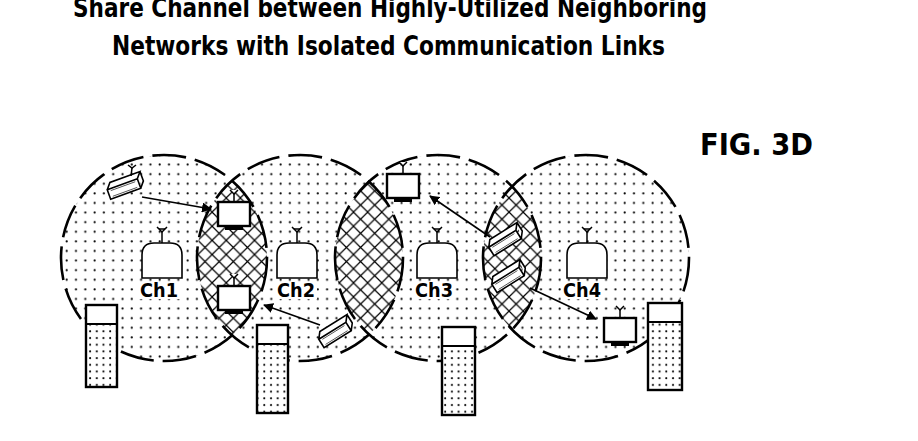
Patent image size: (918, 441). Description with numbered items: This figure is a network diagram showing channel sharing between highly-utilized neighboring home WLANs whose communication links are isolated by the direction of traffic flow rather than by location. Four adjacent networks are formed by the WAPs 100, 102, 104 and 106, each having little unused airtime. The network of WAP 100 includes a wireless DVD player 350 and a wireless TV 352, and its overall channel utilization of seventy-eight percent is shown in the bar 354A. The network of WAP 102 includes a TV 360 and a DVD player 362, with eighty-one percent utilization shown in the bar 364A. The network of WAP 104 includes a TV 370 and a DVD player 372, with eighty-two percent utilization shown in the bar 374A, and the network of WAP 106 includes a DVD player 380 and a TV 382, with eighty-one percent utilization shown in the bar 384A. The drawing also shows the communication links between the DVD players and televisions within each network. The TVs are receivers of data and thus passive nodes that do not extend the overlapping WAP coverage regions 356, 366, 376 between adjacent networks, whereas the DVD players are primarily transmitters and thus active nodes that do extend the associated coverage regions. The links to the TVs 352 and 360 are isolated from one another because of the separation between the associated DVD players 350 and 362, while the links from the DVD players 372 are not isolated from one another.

The WAP 100 is at (143, 258).
The WAP 102 is at (303, 240).
The WAP 104 is at (412, 242).
The WAP 106 is at (602, 225).
The wireless DVD player 350 is at (108, 190).
The wireless TV 352 is at (213, 200).
The bar 354A is at (85, 360).
The overlapping WAP coverage region 356 is at (222, 178).
The TV 360 is at (233, 320).
The DVD player 362 is at (338, 352).
The bar 364A is at (257, 367).
The overlapping WAP coverage region 366 is at (367, 183).
The TV 370 is at (417, 173).
The DVD player 372 is at (498, 192).
The bar 374A is at (477, 360).
The overlapping WAP coverage region 376 is at (510, 185).
The DVD player 380 is at (520, 291).
The TV 382 is at (612, 347).
The bar 384A is at (683, 360).